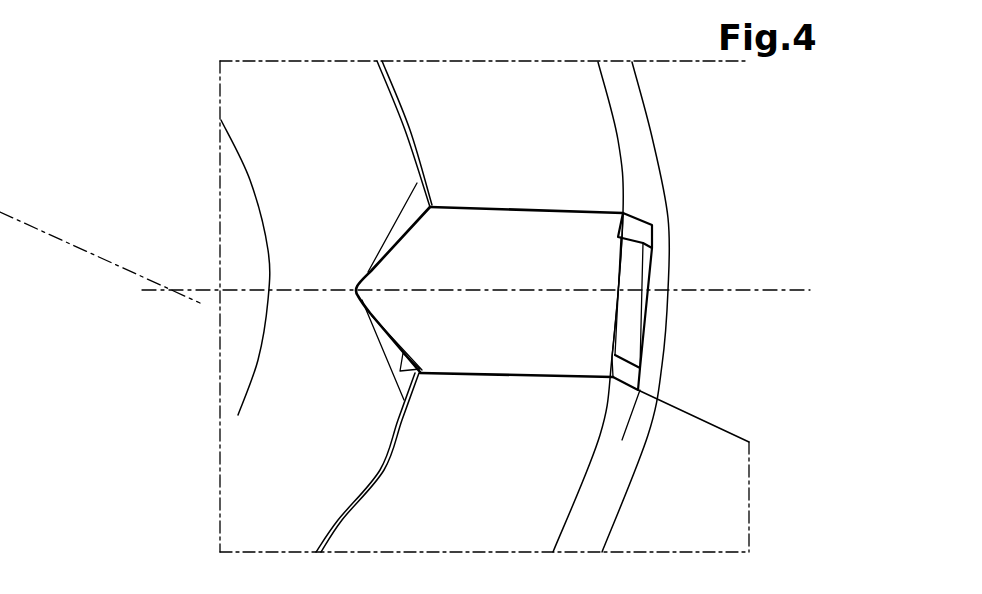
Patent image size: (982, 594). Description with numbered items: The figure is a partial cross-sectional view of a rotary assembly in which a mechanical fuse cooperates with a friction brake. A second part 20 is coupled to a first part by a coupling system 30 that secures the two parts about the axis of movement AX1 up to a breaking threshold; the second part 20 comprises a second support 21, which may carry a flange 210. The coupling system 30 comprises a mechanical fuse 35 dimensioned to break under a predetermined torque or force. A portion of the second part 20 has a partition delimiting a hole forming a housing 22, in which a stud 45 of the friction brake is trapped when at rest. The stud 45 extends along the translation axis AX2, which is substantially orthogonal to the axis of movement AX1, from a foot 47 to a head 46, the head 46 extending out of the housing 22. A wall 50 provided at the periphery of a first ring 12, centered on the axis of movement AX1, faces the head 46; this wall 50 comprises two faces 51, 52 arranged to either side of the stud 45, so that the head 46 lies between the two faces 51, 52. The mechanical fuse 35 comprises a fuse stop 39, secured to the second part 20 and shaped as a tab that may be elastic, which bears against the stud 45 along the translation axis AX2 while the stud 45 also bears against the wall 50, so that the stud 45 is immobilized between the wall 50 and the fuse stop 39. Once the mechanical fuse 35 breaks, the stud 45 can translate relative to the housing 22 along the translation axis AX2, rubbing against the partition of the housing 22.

The first ring 12 is at (318, 93).
The second part 20 is at (618, 143).
The second support 21 is at (588, 307).
The housing 22 is at (570, 378).
The coupling system 30 is at (684, 257).
The mechanical fuse 35 is at (650, 303).
The flange 210 is at (667, 322).
The fuse stop 39 is at (630, 340).
The stud 45 is at (538, 379).
The head 46 is at (400, 371).
The foot 47 is at (660, 380).
The wall 50 is at (381, 382).
The face 51 is at (377, 338).
The face 52 is at (407, 213).
The axis of movement AX1 is at (55, 238).
The translation axis AX2 is at (784, 291).